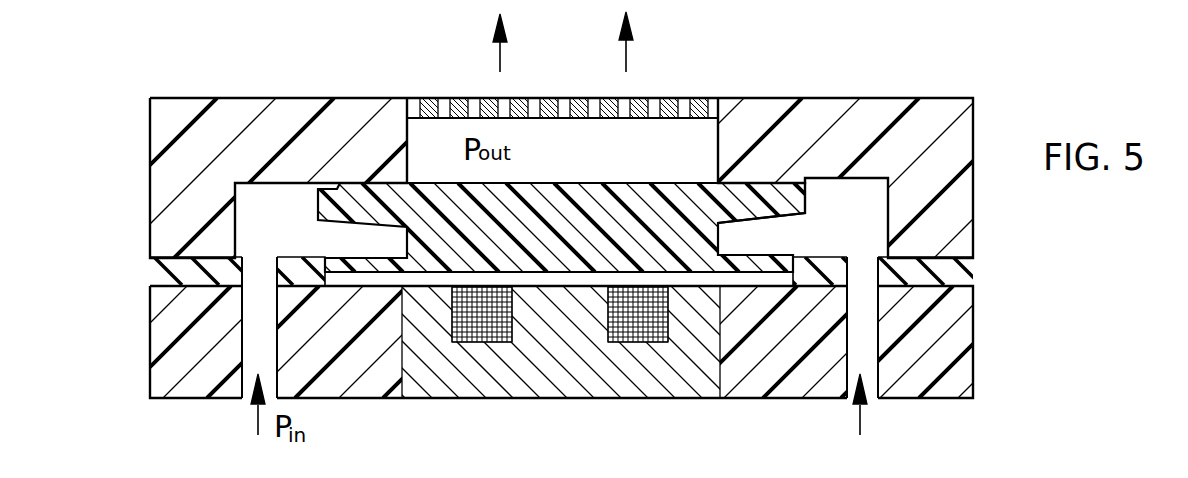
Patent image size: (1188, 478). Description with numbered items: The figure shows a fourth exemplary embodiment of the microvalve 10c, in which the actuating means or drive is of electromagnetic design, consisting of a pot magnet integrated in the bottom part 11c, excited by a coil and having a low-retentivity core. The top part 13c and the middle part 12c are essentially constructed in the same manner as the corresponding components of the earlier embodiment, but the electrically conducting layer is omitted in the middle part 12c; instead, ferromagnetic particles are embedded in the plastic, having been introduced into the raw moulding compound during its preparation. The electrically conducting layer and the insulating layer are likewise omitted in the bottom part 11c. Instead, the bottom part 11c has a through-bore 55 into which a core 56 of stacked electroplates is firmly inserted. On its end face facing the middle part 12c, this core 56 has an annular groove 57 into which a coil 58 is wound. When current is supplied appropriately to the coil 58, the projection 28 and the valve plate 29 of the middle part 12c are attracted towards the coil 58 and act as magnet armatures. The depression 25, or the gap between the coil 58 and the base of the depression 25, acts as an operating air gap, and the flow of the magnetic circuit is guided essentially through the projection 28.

The microvalve 10c is at (977, 133).
The bottom part 11c is at (977, 330).
The middle part 12c is at (977, 270).
The top part 13c is at (823, 107).
The depression 25 is at (710, 272).
The projection 28 is at (717, 240).
The valve plate 29 is at (797, 203).
The through-bore 55 is at (403, 357).
The core 56 is at (535, 365).
The annular groove 57 is at (460, 317).
The coil 58 is at (657, 343).